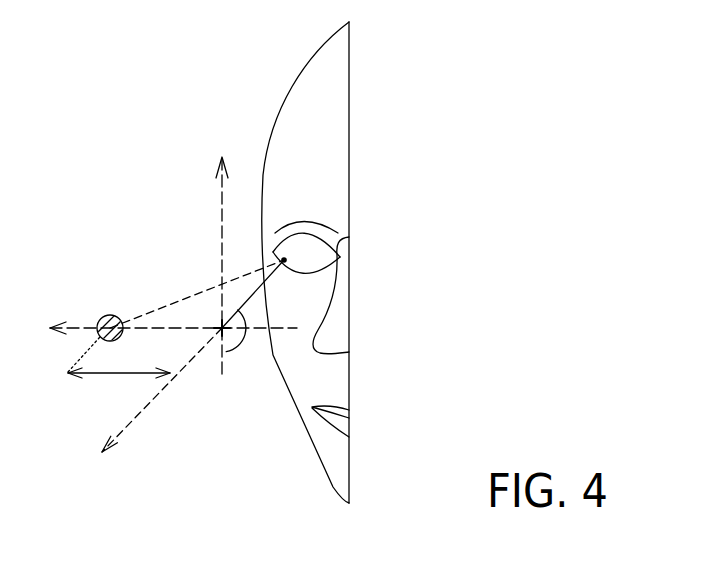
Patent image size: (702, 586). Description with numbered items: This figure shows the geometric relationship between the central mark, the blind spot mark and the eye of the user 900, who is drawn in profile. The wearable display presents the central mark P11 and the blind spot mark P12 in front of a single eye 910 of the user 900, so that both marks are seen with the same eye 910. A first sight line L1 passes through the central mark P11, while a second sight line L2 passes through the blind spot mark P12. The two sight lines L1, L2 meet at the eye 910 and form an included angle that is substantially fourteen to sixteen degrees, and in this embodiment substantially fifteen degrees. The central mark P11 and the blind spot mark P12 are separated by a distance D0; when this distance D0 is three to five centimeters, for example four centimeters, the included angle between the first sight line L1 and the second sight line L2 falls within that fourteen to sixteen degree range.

The user 900 is at (335, 170).
The eye 910 is at (349, 237).
The central mark P11 is at (220, 322).
The blind spot mark P12 is at (109, 315).
The first sight line L1 is at (232, 282).
The second sight line L2 is at (250, 297).
The distance D0 is at (119, 386).